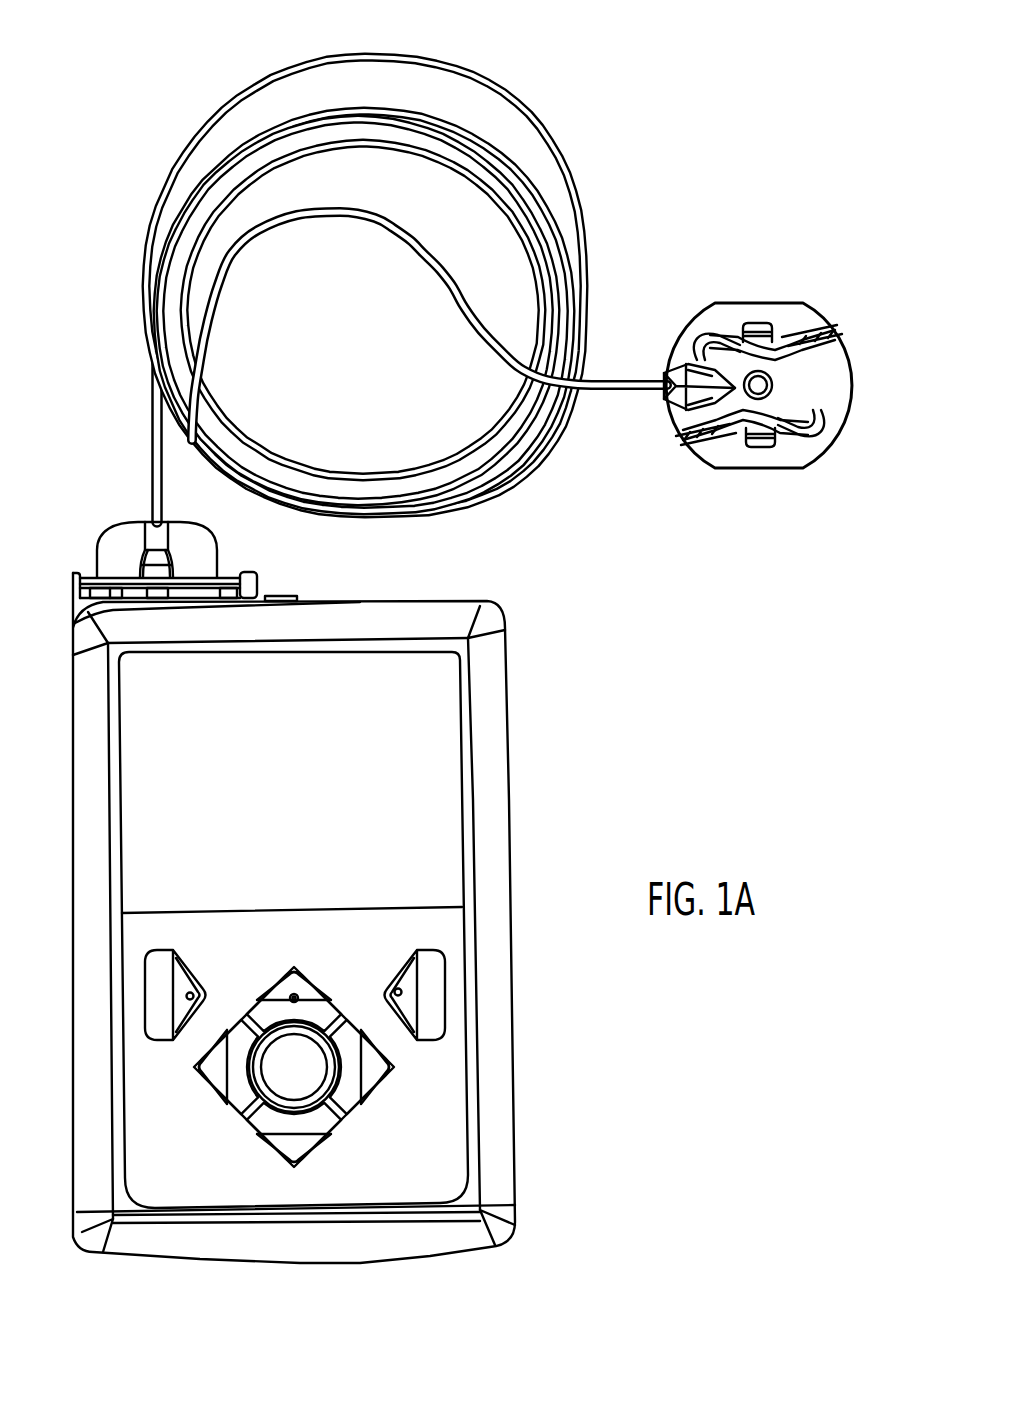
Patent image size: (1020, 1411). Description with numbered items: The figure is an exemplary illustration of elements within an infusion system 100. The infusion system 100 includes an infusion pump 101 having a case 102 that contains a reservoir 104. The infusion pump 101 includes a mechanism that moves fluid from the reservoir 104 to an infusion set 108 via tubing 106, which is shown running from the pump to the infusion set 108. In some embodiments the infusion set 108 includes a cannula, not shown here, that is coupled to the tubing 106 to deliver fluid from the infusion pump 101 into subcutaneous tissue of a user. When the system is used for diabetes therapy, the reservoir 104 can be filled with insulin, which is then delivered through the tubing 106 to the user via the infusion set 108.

The infusion system 100 is at (179, 114).
The infusion pump 101 is at (524, 1047).
The case 102 is at (510, 737).
The reservoir 104 is at (125, 522).
The tubing 106 is at (534, 140).
The infusion set 108 is at (703, 305).